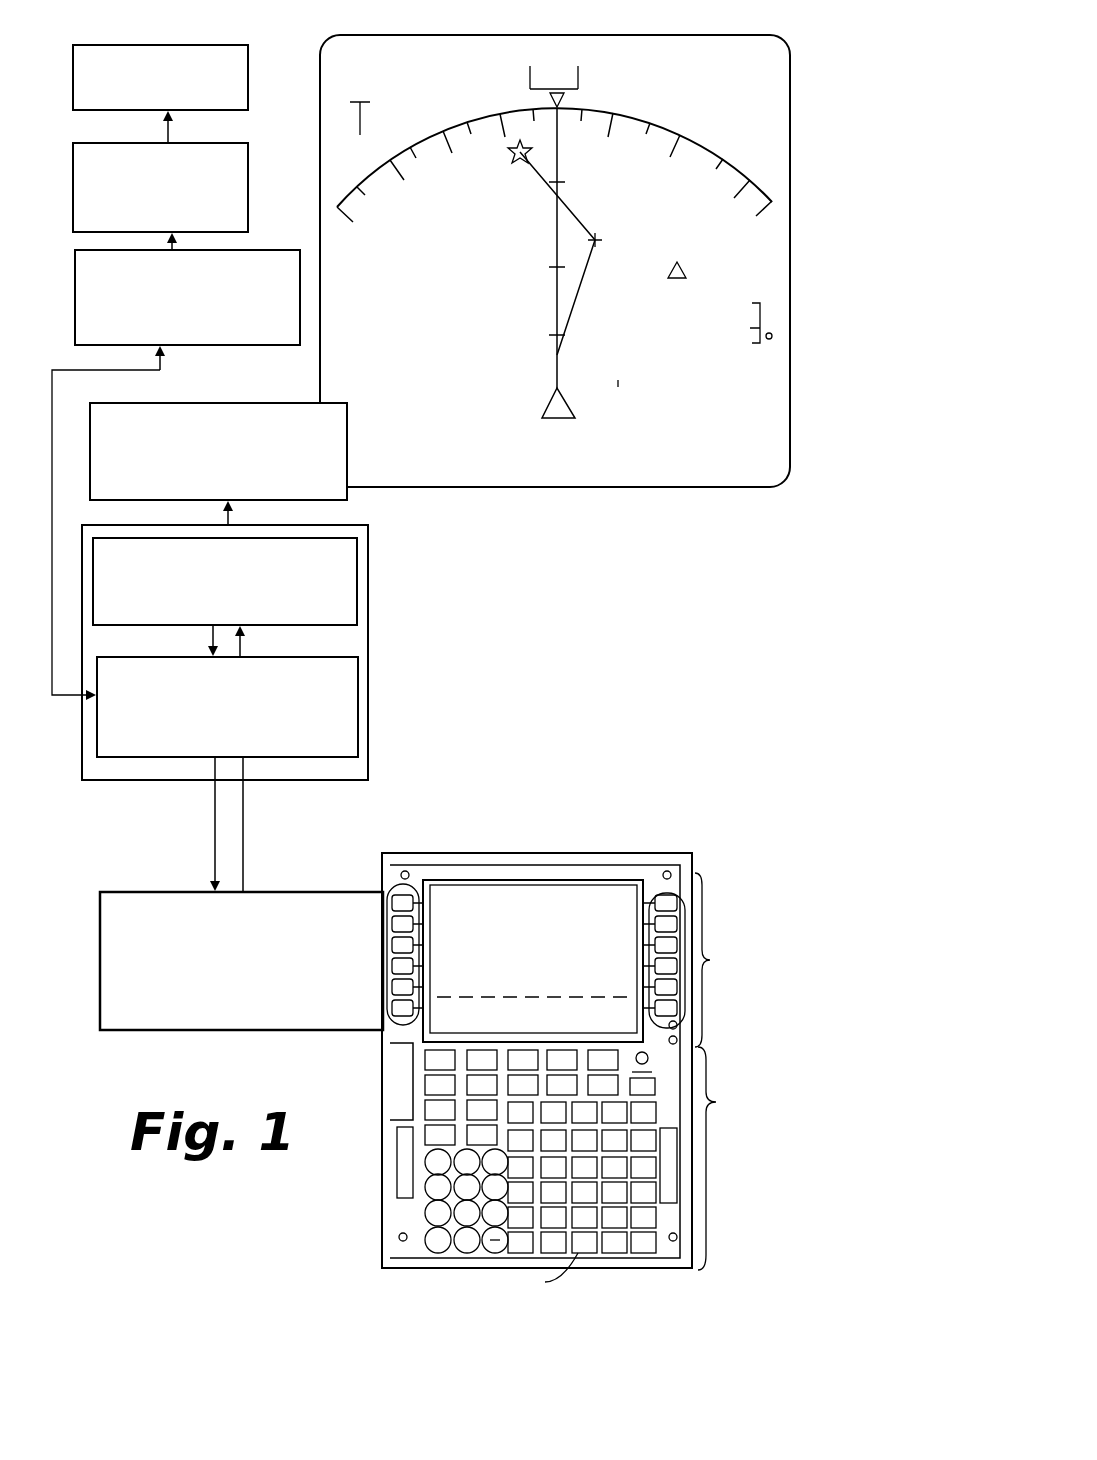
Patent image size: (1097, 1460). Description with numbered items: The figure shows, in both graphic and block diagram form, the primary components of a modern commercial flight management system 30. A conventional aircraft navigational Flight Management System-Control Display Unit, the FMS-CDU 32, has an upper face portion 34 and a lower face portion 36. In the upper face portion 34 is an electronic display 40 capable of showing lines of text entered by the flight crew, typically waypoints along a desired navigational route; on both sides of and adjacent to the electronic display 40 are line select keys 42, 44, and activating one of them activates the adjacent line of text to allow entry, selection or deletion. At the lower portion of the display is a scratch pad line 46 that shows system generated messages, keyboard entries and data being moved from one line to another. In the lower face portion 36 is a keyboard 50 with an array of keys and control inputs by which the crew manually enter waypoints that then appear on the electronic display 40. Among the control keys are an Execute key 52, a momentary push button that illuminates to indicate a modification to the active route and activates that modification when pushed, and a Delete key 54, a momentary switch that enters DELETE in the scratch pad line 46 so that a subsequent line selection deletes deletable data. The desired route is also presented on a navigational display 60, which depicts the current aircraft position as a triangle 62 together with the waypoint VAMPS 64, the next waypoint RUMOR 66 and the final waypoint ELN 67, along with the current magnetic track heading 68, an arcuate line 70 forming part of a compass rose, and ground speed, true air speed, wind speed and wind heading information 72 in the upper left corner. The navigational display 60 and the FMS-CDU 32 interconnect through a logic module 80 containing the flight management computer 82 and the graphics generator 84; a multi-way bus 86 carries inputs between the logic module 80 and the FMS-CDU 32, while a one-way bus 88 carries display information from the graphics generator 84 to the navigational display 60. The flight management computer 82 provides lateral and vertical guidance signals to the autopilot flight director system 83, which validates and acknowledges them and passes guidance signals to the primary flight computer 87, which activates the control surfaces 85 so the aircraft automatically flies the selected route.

The flight management system 30 is at (600, 707).
The Flight Management System-Control Display Unit (FMS-CDU) 32 is at (372, 872).
The upper face portion 34 is at (730, 960).
The lower face portion 36 is at (583, 1158).
The electronic display 40 is at (623, 967).
The line select keys 42 is at (415, 880).
The line select keys 44 is at (655, 878).
The scratch pad line 46 is at (630, 1025).
The keyboard 50 is at (507, 1148).
The Execute key 52 is at (645, 1090).
The Delete key 54 is at (585, 1255).
The navigational display (MAP) 60 is at (258, 410).
The triangle 62 is at (577, 413).
The waypoint VAMPS 64 is at (563, 355).
The waypoint RUMOR 66 is at (598, 238).
The waypoint ELN 67 is at (463, 190).
The magnetic track heading 68 is at (568, 50).
The arcuate line 70 is at (318, 128).
The ground speed, true air speed, wind speed and wind heading information 72 is at (318, 42).
The logic module 80 is at (370, 700).
The flight management computer (FMC) 82 is at (345, 742).
The autopilot flight director system (AFDS) 83 is at (276, 252).
The graphics generator (display module) 84 is at (357, 606).
The control surfaces 85 is at (249, 75).
The multi-way bus 86 is at (215, 832).
The Primary Flight Computer (PFC) 87 is at (251, 182).
The one-way bus 88 is at (235, 513).